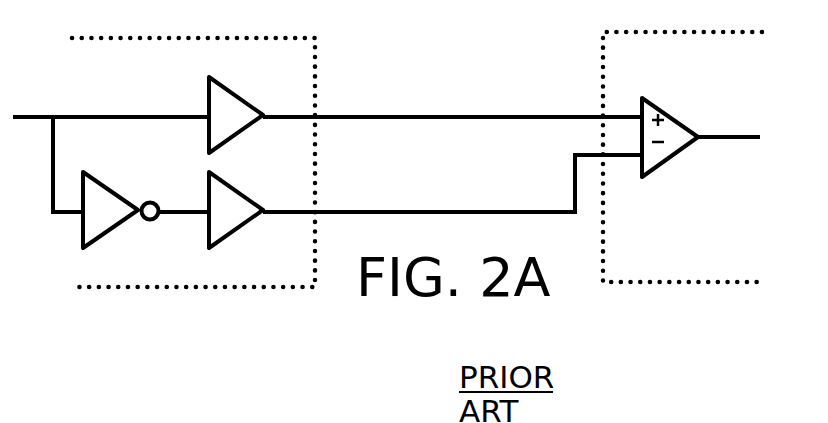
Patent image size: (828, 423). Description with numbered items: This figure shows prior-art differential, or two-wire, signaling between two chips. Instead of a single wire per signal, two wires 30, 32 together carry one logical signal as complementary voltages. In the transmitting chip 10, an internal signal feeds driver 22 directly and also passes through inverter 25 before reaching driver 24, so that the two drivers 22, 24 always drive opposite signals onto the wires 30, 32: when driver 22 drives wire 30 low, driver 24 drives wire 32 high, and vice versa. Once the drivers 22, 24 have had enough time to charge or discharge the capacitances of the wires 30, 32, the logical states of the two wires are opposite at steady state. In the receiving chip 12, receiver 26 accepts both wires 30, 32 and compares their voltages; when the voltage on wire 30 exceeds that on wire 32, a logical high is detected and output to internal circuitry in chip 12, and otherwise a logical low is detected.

The chip 10 is at (298, 274).
The chip 12 is at (655, 257).
The driver 22 is at (257, 113).
The driver 24 is at (257, 208).
The inverter 25 is at (134, 206).
The receiver 26 is at (690, 127).
The wire 30 is at (393, 115).
The wire 32 is at (393, 210).